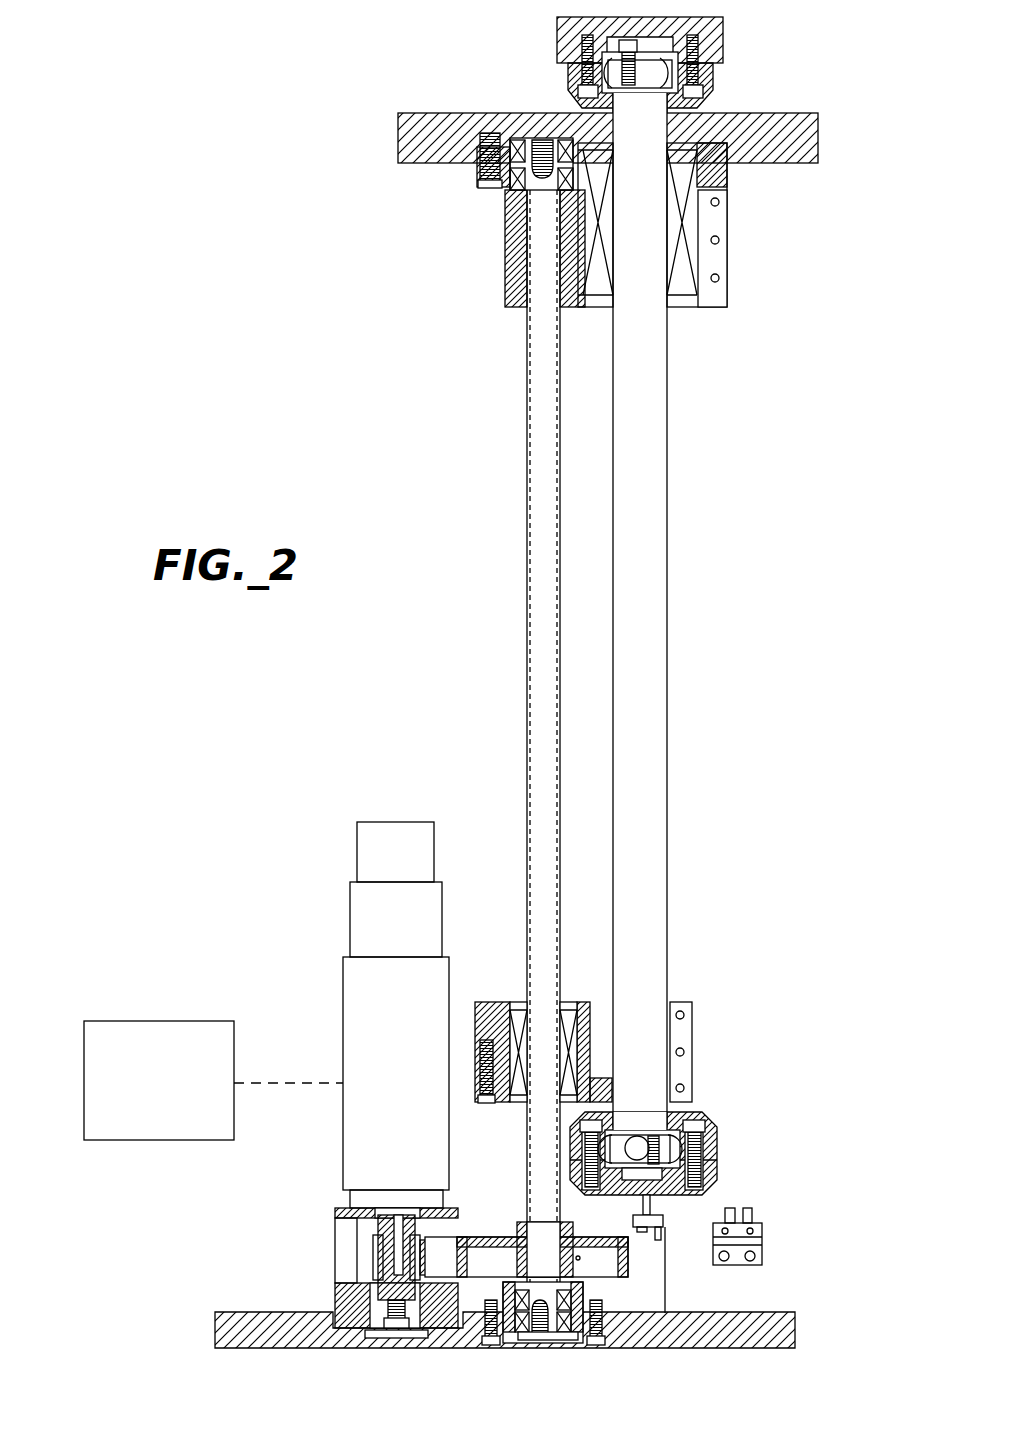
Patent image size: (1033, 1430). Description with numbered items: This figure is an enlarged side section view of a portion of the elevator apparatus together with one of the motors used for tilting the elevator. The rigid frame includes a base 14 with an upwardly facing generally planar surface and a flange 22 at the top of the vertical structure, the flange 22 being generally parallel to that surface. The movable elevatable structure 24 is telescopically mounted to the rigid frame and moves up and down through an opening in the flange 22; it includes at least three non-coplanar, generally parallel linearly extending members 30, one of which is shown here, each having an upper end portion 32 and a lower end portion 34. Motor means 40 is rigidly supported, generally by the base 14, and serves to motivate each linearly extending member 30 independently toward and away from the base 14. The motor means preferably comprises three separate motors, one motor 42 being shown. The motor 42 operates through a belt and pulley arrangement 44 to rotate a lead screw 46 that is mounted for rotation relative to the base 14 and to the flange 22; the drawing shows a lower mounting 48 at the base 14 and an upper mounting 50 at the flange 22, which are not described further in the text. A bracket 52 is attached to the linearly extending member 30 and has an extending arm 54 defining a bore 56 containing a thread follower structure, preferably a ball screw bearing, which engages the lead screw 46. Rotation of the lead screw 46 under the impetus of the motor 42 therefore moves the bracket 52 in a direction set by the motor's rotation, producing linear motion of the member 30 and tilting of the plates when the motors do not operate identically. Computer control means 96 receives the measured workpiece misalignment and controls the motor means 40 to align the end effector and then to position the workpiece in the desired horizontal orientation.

The base 14 is at (798, 1333).
The flange 22 is at (396, 126).
The movable elevatable structure 24 is at (720, 1168).
The linearly extending member 30 is at (669, 680).
The upper end portion 32 is at (565, 78).
The lower end portion 34 is at (720, 1140).
The motor means 40 is at (342, 1170).
The motor 42 is at (396, 1073).
The belt and pulley arrangement 44 is at (333, 1250).
The lead screw 46 is at (525, 483).
The lower bearing 48 is at (586, 1302).
The upper bearing housing 50 is at (500, 196).
The bracket 52 is at (696, 1000).
The extending arm 54 is at (505, 1000).
The bore 56 is at (575, 1000).
The computer control means 96 is at (213, 1080).